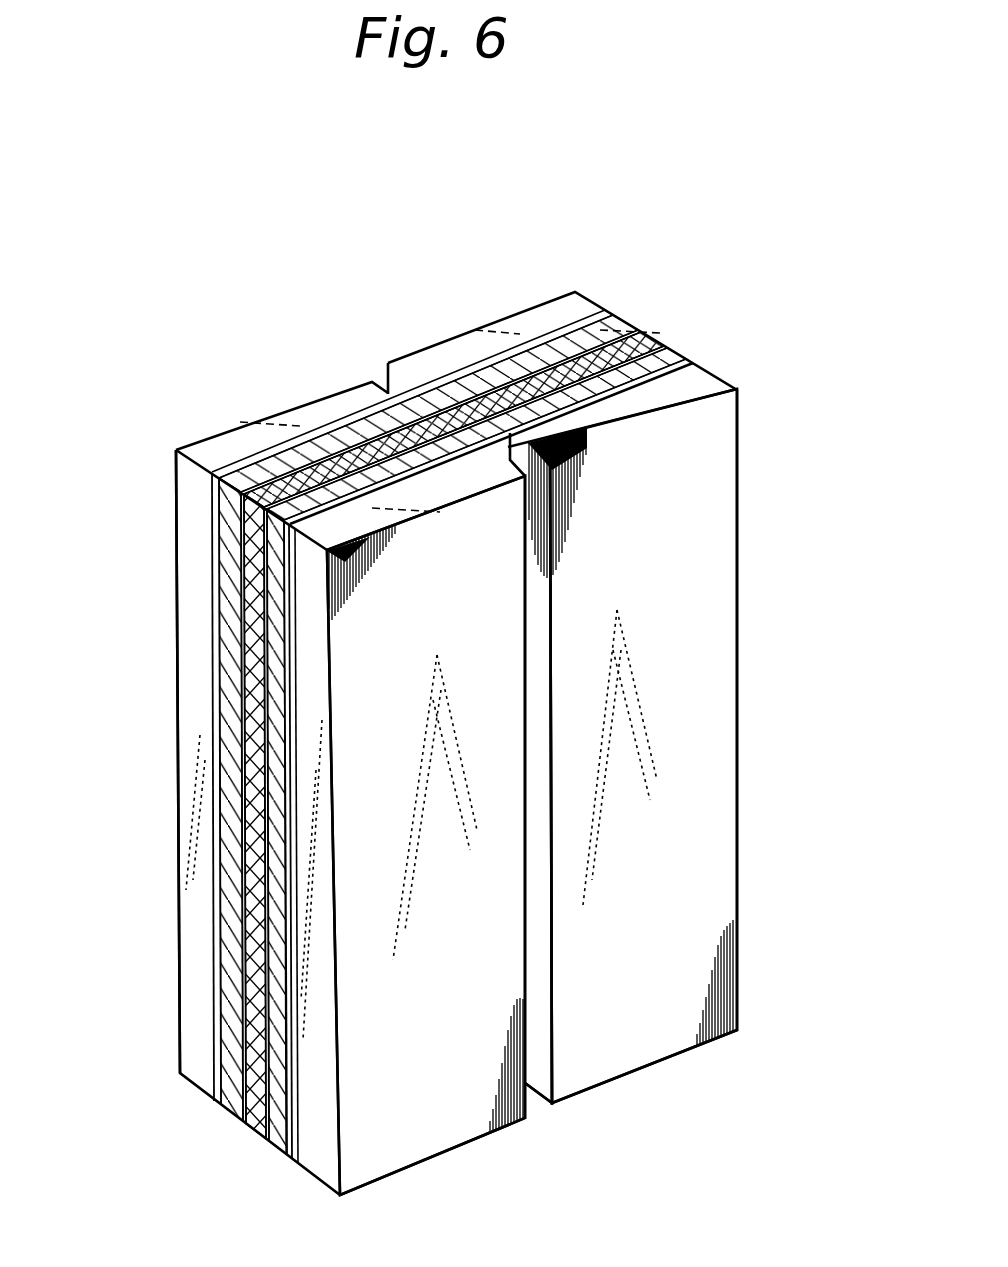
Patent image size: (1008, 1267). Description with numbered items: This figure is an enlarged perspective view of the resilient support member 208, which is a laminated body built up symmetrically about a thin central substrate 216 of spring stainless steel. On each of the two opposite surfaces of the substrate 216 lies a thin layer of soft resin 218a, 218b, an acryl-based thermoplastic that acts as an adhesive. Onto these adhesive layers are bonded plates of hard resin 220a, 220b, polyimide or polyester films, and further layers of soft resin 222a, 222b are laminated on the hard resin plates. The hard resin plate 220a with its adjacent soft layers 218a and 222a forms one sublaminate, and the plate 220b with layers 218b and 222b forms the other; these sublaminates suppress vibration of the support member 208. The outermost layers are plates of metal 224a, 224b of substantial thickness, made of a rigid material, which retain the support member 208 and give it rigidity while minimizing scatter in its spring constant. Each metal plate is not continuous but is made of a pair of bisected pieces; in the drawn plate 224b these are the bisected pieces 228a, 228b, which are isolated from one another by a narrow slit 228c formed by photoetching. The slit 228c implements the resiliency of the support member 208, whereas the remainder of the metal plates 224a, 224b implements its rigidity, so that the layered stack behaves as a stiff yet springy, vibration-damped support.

The support member 208 is at (280, 326).
The substrate 216 is at (657, 342).
The layer of soft resin 218a is at (645, 333).
The layer of soft resin 218b is at (668, 348).
The plate of hard resin 220a is at (622, 328).
The plate of hard resin 220b is at (682, 358).
The layer of soft resin 222a is at (628, 316).
The layer of soft resin 222b is at (692, 362).
The metal plate 224a is at (205, 455).
The metal plate 224b is at (333, 526).
The bisected piece 228a is at (448, 1120).
The bisected piece 228b is at (647, 1040).
The slit 228c is at (540, 774).